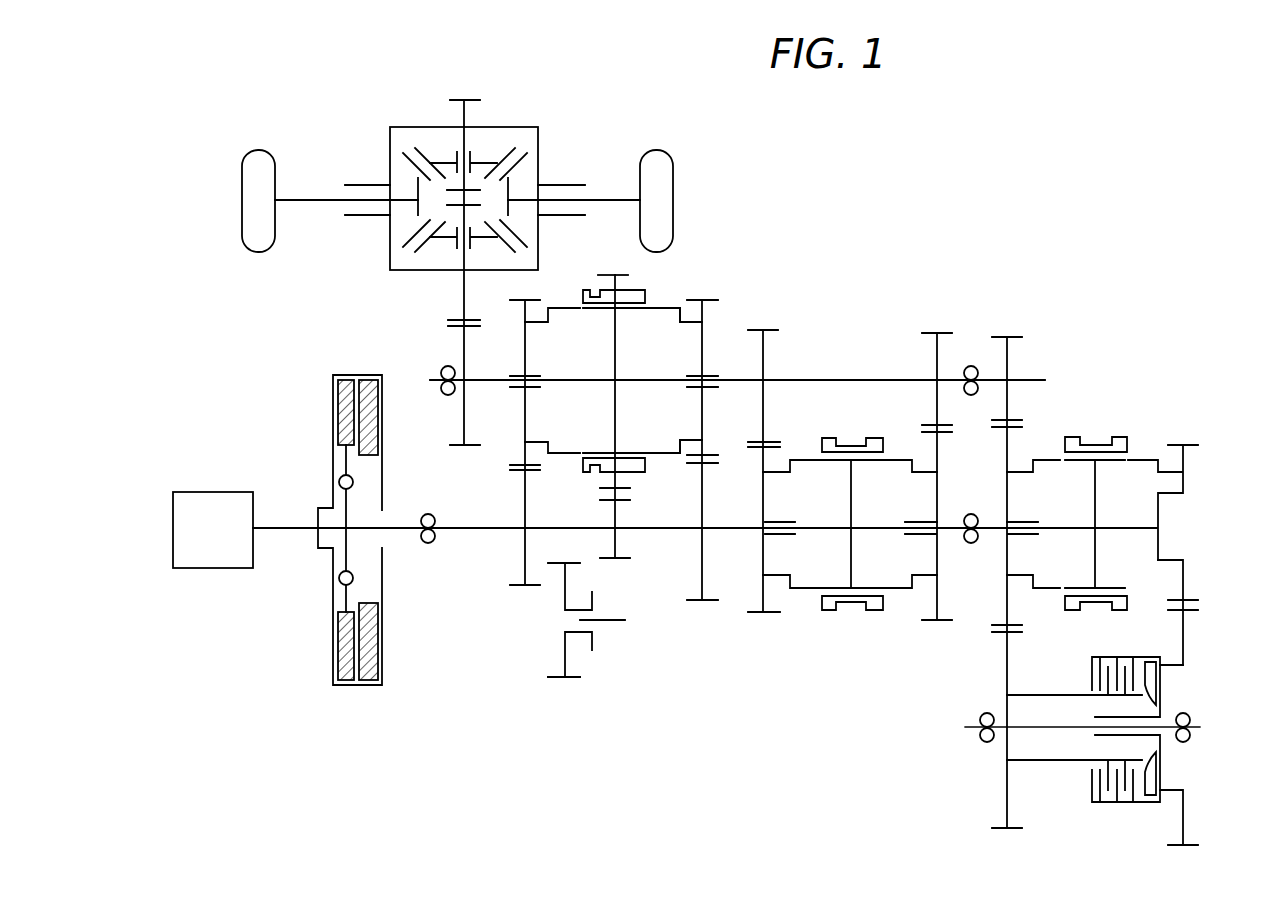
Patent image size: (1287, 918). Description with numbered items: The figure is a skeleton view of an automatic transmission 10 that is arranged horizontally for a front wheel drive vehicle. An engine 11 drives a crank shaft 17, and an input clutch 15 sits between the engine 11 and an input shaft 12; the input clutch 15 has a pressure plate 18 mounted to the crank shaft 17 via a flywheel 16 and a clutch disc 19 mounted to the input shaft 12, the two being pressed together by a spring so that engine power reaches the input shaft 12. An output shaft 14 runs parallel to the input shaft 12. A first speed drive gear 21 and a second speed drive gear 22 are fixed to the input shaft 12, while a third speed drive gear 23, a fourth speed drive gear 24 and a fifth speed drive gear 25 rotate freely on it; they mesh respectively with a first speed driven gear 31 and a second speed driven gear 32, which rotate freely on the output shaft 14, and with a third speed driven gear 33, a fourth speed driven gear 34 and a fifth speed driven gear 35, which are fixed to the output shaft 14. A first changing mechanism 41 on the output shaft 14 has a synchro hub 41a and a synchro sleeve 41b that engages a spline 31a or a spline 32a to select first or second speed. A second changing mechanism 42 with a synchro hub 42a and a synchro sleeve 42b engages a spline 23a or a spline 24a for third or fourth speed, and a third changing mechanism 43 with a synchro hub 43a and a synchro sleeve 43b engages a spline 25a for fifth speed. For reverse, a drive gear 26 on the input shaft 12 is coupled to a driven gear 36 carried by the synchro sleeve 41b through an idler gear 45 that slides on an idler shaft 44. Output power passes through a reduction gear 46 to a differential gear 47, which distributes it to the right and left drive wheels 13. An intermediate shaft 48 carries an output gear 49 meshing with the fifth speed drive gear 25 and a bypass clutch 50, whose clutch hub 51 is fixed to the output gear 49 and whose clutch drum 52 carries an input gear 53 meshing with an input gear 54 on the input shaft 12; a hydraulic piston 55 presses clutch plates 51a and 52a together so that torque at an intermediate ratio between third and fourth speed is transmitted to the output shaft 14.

The automatic transmission 10 is at (882, 240).
The engine 11 is at (200, 490).
The input shaft 12 is at (458, 532).
The drive wheel 13 is at (255, 152).
The output shaft 14 is at (1022, 378).
The input clutch 15 is at (339, 503).
The flywheel 16 is at (337, 412).
The crank shaft 17 is at (285, 533).
The pressure plate 18 is at (383, 468).
The clutch disc 19 is at (345, 468).
The first speed drive gear 21 is at (522, 590).
The second speed drive gear 22 is at (706, 604).
The third speed drive gear 23 is at (768, 615).
The spline 23a is at (802, 458).
The fourth speed drive gear 24 is at (934, 624).
The spline 24a is at (896, 458).
The fifth speed drive gear 25 is at (1005, 596).
The spline 25a is at (1045, 458).
The drive gear for backward movement 26 is at (618, 562).
The first speed driven gear 31 is at (523, 421).
The spline 31a is at (560, 458).
The second speed driven gear 32 is at (706, 299).
The spline 32a is at (672, 306).
The third speed driven gear 33 is at (760, 328).
The fourth speed driven gear 34 is at (940, 331).
The fifth speed driven gear 35 is at (1008, 334).
The driven gear for backward movement 36 is at (602, 274).
The first changing mechanism 41 is at (621, 408).
The synchro hub 41a is at (617, 410).
The synchro sleeve 41b is at (635, 474).
The second changing mechanism 42 is at (868, 540).
The synchro hub 42a is at (853, 490).
The synchro sleeve 42b is at (840, 436).
The third changing mechanism 43 is at (1119, 482).
The synchro hub 43a is at (1097, 487).
The synchro sleeve 43b is at (1088, 436).
The idler shaft 44 is at (598, 622).
The idler gear 45 is at (575, 680).
The reduction gear 46 is at (462, 342).
The differential gear 47 is at (382, 132).
The intermediate shaft 48 is at (1195, 730).
The output gear 49 is at (1005, 792).
The bypass clutch 50 is at (1095, 740).
The clutch hub 51 is at (1052, 692).
The clutch plates 51a is at (1097, 792).
The clutch drum 52 is at (1130, 656).
The clutch plates 52a is at (1130, 792).
The input gear 53 is at (1185, 635).
The input gear 54 is at (1190, 443).
The hydraulic piston 55 is at (1158, 677).